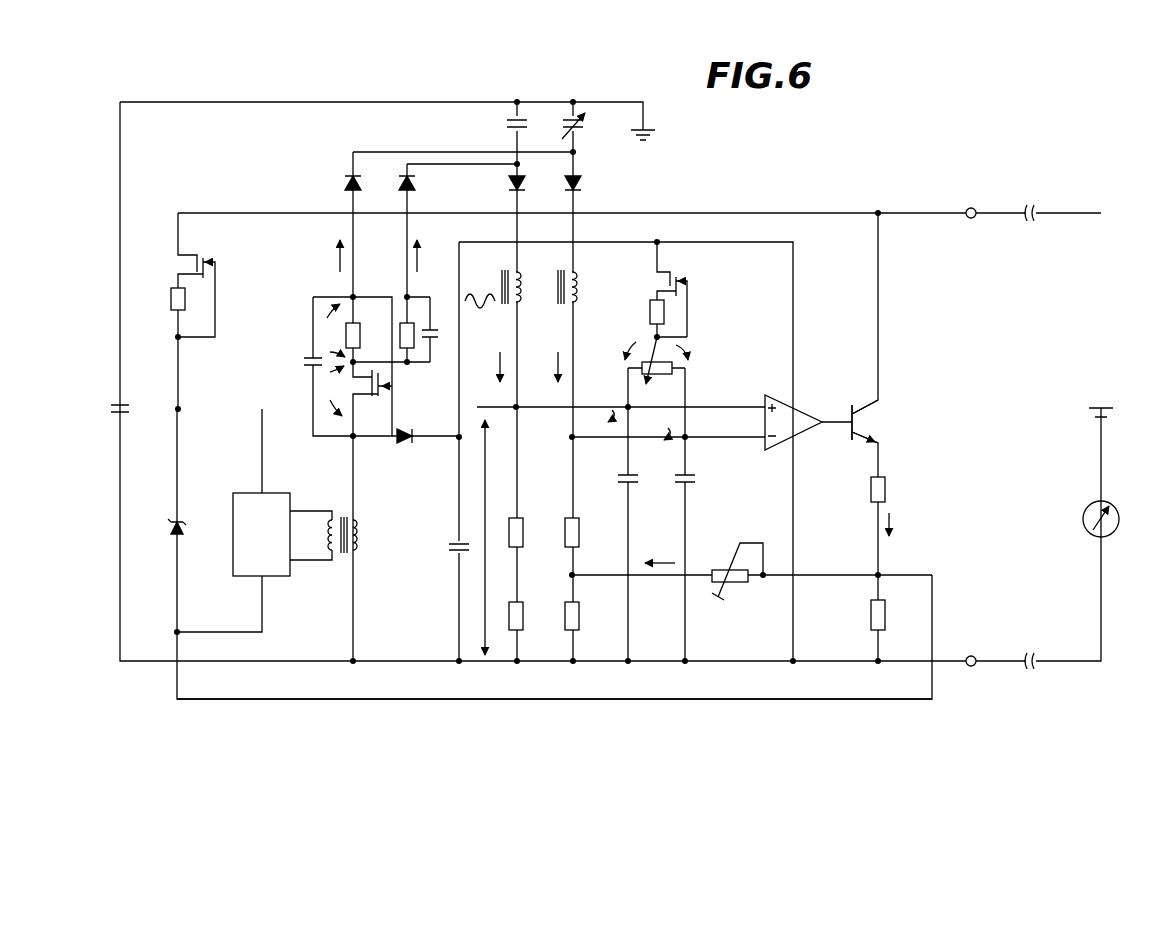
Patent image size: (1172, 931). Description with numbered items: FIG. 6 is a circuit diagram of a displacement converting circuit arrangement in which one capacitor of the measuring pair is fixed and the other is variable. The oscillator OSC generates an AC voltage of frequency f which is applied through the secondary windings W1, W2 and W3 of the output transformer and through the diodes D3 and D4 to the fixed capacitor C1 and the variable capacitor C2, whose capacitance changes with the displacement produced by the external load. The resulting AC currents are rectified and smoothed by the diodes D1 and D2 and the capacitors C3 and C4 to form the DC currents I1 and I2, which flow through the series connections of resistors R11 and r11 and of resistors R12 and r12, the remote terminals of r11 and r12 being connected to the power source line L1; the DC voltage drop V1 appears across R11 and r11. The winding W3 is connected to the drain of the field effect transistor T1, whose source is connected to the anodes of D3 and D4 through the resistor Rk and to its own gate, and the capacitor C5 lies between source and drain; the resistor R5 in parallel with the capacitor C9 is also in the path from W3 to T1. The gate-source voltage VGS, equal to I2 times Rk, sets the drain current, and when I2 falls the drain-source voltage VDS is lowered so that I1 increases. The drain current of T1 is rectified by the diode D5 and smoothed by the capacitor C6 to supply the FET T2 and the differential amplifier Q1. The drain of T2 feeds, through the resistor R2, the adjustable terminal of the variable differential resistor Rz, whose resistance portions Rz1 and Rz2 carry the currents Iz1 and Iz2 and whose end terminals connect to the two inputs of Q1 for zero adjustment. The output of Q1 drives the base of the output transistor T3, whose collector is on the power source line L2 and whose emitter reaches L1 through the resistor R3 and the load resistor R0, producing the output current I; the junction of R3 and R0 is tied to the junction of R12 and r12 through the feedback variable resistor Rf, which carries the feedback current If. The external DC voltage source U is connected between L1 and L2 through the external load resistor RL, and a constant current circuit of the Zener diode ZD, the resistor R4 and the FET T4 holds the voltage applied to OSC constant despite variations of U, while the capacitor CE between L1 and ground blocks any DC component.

The power source line L1 is at (405, 662).
The power source line L2 is at (740, 213).
The fixed capacitor C1 is at (502, 139).
The variable capacitor C2 is at (584, 139).
The capacitor C3 is at (615, 534).
The capacitor C4 is at (698, 549).
The capacitor C5 is at (332, 366).
The capacitor C6 is at (442, 550).
The capacitor C9 is at (439, 329).
The capacitor CE is at (104, 412).
The diode D1 is at (501, 418).
The diode D2 is at (588, 418).
The diode D3 is at (423, 230).
The diode D4 is at (335, 224).
The diode D5 is at (401, 452).
The field effect transistor T1 is at (375, 399).
The field effect transistor T2 is at (679, 289).
The output transistor T3 is at (875, 422).
The field effect transistor T4 is at (202, 275).
The resistor R2 is at (654, 318).
The resistor R3 is at (893, 493).
The resistor R4 is at (162, 312).
The resistor R5 is at (412, 348).
The load resistor R0 is at (893, 617).
The resistor Rk is at (358, 324).
The variable differential resistor Rz is at (673, 375).
The resistance Rz1 is at (619, 347).
The resistance Rz2 is at (700, 347).
The feedback variable resistor Rf is at (737, 576).
The resistor R11 is at (520, 530).
The resistor R12 is at (586, 528).
The resistor r11 is at (523, 609).
The resistor r12 is at (587, 613).
The secondary winding W1 is at (493, 285).
The secondary winding W2 is at (583, 278).
The secondary winding W3 is at (339, 532).
The Zener diode ZD is at (161, 538).
The oscillator OSC is at (261, 534).
The differential amplifier Q1 is at (794, 428).
The external DC voltage source U is at (1111, 414).
The external load resistor RL is at (1117, 519).
The DC current I1 is at (416, 265).
The DC current I2 is at (331, 265).
The output current I is at (887, 537).
The feedback current If is at (660, 549).
The current Iz1 is at (598, 409).
The current Iz2 is at (654, 426).
The DC voltage drop V1 is at (479, 537).
The gate-source voltage VGS is at (331, 330).
The drain-source voltage VDS is at (329, 391).